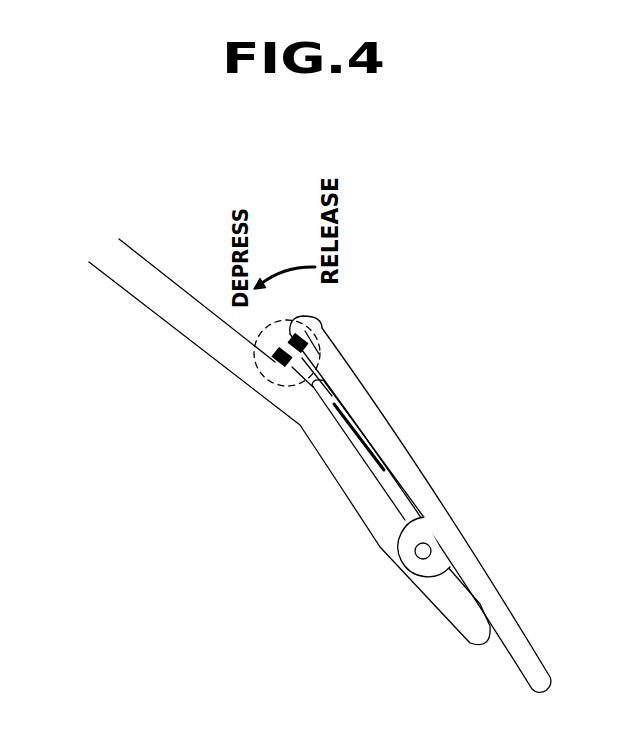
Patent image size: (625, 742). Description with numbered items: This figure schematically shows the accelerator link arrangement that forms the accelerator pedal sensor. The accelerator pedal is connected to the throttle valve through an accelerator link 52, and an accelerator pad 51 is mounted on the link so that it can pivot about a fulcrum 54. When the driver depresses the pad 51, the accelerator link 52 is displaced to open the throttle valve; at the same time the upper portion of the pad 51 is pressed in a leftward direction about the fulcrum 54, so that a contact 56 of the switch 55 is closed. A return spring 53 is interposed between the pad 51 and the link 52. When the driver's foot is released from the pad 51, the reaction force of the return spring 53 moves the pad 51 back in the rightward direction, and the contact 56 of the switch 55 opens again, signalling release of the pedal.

The accelerator pad 51 is at (375, 410).
The accelerator link 52 is at (102, 275).
The return spring 53 is at (386, 467).
The fulcrum 54 is at (415, 552).
The switch 55 is at (258, 390).
The contact 56 is at (305, 367).